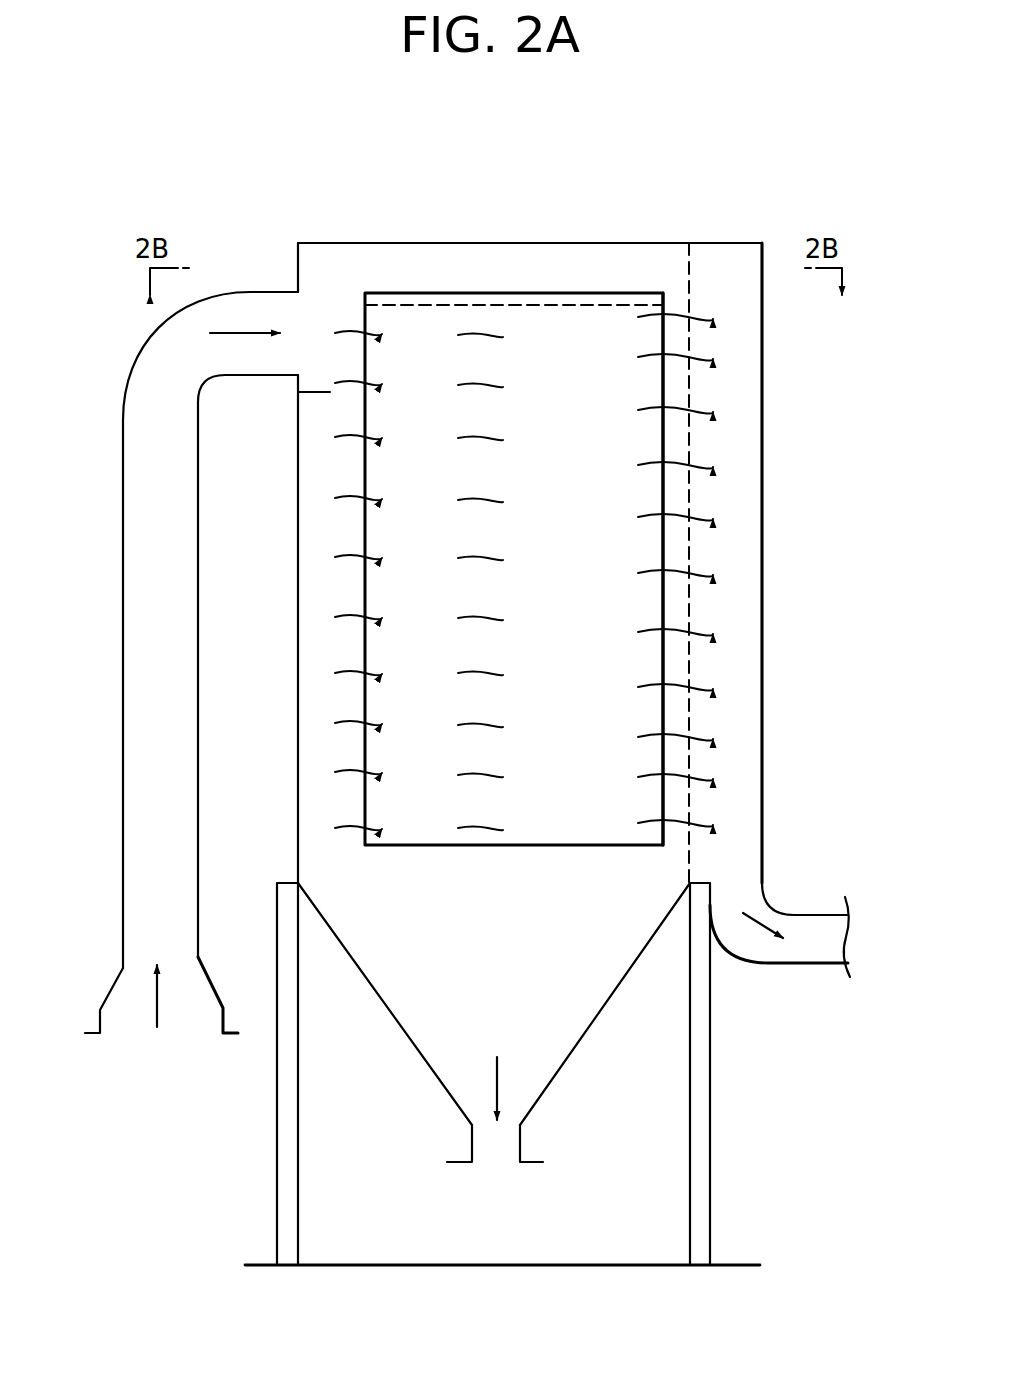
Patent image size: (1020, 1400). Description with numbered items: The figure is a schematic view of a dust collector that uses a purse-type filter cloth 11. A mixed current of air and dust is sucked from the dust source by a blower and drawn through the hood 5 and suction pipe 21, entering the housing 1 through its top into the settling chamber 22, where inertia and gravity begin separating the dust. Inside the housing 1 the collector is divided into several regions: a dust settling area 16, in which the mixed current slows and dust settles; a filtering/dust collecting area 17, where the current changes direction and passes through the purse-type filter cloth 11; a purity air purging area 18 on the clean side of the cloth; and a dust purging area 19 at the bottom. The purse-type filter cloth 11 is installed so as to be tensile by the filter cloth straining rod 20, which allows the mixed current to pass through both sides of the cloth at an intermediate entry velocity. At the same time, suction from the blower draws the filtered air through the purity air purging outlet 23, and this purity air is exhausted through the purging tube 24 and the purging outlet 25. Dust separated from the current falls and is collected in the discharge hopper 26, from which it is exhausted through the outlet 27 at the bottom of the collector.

The housing 1 is at (298, 772).
The hood 5 is at (115, 982).
The purse-type filter cloth 11 is at (663, 487).
The dust settling area 16 is at (330, 598).
The filtering/dust collecting area 17 is at (493, 487).
The purity air purging area 18 is at (742, 676).
The dust purging area 19 is at (568, 1020).
The filter cloth straining rod 20 is at (548, 305).
The suction pipe 21 is at (150, 485).
The settling chamber 22 is at (360, 250).
The purity air purging outlet 23 is at (728, 263).
The purging tube 24 is at (762, 797).
The purging outlet 25 is at (808, 950).
The discharge hopper 26 is at (402, 1028).
The outlet 27 is at (483, 1143).